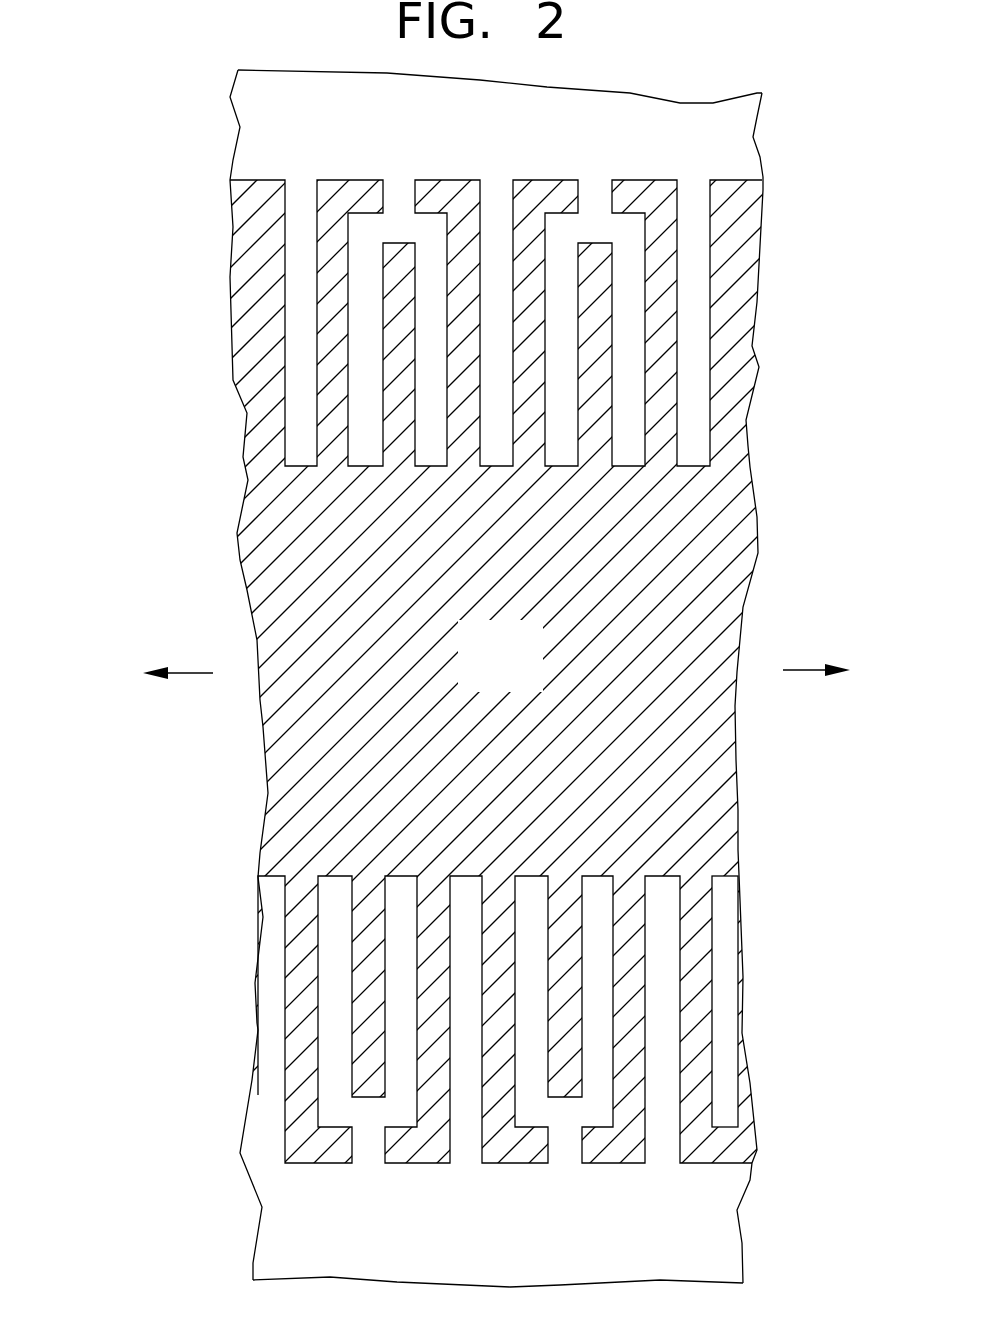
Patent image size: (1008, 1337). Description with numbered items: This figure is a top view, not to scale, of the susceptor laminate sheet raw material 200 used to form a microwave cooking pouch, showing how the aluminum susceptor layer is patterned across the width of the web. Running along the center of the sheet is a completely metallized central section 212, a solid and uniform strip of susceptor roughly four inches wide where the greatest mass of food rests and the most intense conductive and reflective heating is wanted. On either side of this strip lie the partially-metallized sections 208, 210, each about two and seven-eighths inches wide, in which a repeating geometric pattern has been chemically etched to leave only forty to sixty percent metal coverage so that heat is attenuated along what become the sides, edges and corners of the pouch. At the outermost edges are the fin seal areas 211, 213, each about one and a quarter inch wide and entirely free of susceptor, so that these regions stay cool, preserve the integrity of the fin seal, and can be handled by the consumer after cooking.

The susceptor laminate sheet raw material 200 is at (190, 555).
The partially-metallized section 208 is at (190, 277).
The partially-metallized section 210 is at (190, 1025).
The fin seal area 211 is at (527, 144).
The completely metallized central section 212 is at (525, 673).
The fin seal area 213 is at (527, 1238).